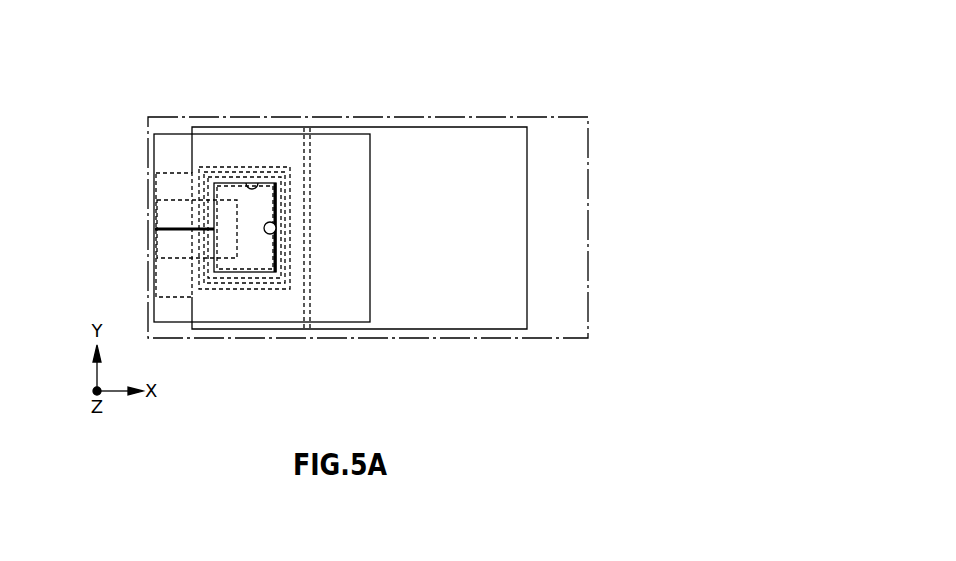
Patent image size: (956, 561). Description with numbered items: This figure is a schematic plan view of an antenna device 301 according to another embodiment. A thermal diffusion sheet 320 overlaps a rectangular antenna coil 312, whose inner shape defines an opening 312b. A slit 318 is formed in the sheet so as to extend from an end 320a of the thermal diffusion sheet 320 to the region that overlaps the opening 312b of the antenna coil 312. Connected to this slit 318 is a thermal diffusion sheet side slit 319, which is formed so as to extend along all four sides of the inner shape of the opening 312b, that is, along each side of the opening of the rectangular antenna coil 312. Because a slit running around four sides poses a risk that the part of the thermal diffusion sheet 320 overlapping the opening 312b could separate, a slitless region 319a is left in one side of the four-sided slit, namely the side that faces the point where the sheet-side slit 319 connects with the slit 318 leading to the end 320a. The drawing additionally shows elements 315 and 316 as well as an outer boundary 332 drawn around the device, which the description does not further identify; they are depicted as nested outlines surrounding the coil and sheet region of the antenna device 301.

The antenna device 301 is at (556, 88).
The antenna coil 312 is at (223, 165).
The opening 312b is at (252, 183).
The substrate region 315 is at (484, 147).
The substrate 316 is at (288, 133).
The slit 318 is at (177, 228).
The thermal diffusion sheet side slit 319 is at (248, 272).
The slitless region 319a is at (270, 222).
The thermal diffusion sheet 320 is at (170, 148).
The end 320a is at (155, 185).
The outer boundary 332 is at (589, 176).